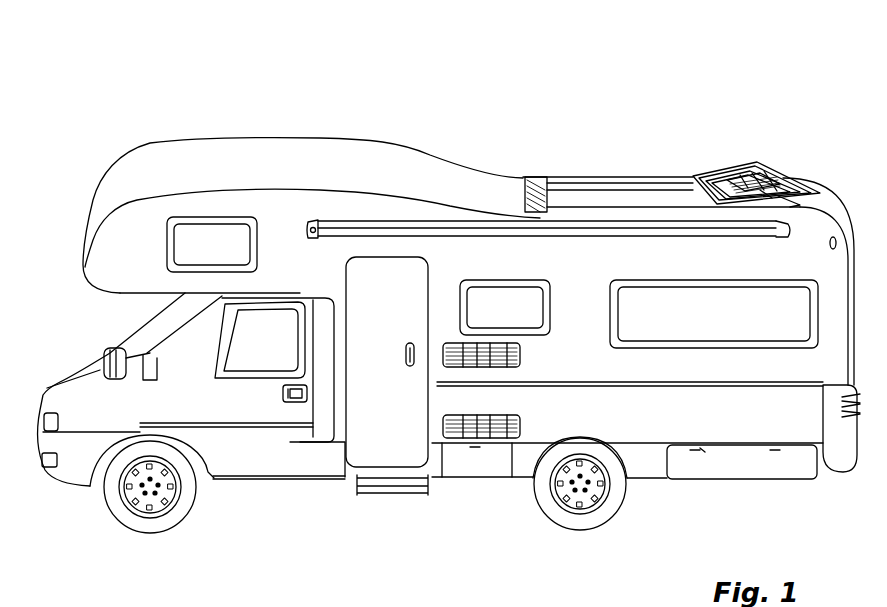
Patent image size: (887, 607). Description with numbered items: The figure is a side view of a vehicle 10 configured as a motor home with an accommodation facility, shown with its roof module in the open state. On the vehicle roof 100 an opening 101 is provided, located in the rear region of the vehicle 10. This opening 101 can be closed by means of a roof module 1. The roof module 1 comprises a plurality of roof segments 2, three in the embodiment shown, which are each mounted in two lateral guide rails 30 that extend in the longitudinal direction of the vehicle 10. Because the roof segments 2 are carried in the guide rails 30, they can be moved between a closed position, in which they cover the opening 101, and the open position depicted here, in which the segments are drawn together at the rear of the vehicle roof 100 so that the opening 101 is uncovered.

The vehicle 10 is at (86, 67).
The vehicle roof 100 is at (379, 174).
The opening 101 is at (662, 190).
The lateral guide rails 30 is at (613, 177).
The roof module 1 is at (705, 92).
The roof segments 2 is at (722, 170).